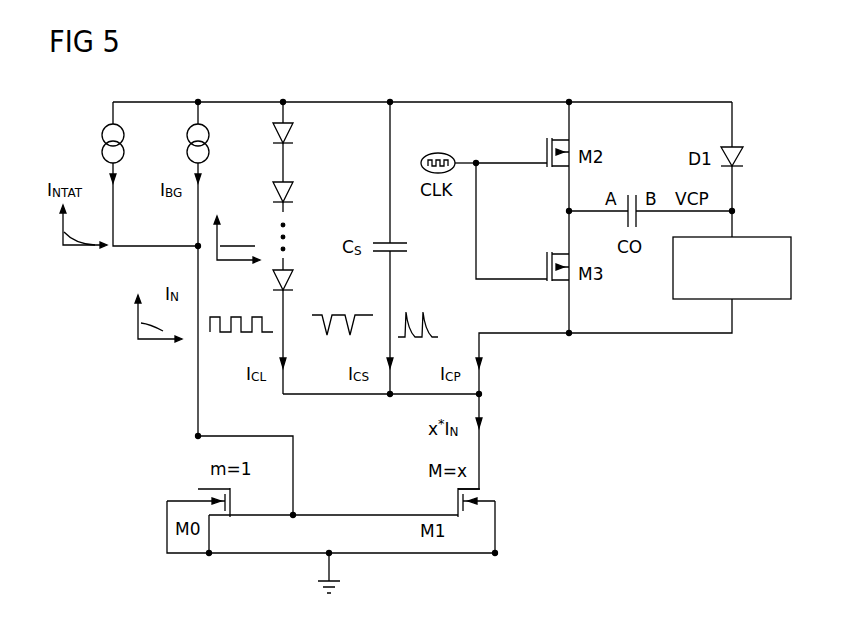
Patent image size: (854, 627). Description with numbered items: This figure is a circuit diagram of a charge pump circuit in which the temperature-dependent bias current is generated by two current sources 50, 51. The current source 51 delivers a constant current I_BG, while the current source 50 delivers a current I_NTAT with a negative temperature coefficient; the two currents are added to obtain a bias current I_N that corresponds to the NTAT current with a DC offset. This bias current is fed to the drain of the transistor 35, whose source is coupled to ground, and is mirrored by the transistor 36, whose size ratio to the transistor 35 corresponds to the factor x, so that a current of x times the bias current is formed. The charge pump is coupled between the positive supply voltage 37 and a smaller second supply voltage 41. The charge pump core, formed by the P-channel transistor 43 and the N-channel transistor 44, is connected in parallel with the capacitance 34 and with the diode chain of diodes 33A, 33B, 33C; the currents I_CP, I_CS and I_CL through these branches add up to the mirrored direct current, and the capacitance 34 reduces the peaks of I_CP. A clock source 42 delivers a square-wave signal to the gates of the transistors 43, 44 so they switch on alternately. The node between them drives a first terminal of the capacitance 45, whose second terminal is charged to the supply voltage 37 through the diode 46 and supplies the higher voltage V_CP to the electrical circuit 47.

The diode 33A is at (293, 137).
The diode 33B is at (293, 196).
The diode 33C is at (293, 283).
The capacitance 34 is at (410, 249).
The transistor 35 is at (238, 503).
The transistor 36 is at (450, 503).
The positive supply voltage 37 is at (440, 101).
The second supply voltage 41 is at (518, 338).
The clock source 42 is at (439, 152).
The transistor 43 is at (545, 155).
The transistor 44 is at (545, 266).
The capacitance 45 is at (634, 192).
The diode 46 is at (738, 146).
The electrical circuit 47 is at (758, 236).
The current source 50 is at (125, 140).
The current source 51 is at (210, 140).